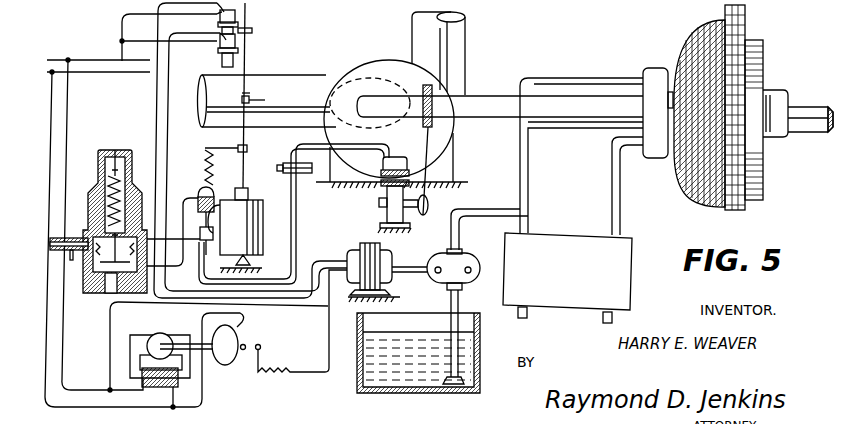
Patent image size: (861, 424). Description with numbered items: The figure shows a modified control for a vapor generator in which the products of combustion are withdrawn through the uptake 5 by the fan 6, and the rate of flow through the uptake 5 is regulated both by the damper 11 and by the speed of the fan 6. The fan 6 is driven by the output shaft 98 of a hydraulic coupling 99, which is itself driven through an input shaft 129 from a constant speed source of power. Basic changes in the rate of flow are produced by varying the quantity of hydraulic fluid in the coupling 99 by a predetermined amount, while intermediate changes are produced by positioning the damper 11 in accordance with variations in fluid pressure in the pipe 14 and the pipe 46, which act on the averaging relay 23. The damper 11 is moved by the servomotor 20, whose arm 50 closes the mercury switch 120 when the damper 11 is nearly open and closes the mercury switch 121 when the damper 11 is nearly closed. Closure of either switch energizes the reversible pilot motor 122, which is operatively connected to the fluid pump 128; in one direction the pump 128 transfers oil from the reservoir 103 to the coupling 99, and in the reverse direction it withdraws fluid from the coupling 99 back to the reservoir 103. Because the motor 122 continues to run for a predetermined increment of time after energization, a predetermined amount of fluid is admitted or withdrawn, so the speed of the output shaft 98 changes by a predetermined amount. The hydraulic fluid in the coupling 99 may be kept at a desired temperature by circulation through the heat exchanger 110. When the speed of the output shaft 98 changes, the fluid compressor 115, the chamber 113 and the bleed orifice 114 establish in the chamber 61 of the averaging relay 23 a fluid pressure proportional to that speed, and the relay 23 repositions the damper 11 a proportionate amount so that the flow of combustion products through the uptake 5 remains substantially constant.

The uptake 5 is at (316, 67).
The fan 6 is at (375, 60).
The damper 11 is at (263, 105).
The pipe 14 is at (92, 200).
The servomotor 20 is at (263, 236).
The averaging relay 23 is at (136, 162).
The pipe 46 is at (75, 262).
The arm 50 is at (249, 28).
The chamber 61 is at (95, 232).
The output shaft 98 is at (480, 82).
The hydraulic coupling 99 is at (762, 40).
The reservoir 103 is at (480, 350).
The heat exchanger 110 is at (634, 265).
The chamber 113 is at (306, 175).
The bleed orifice 114 is at (277, 167).
The fluid compressor 115 is at (386, 182).
The mercury switch 120 is at (215, 22).
The mercury switch 121 is at (218, 47).
The reversible pilot motor 122 is at (370, 250).
The fluid pump 128 is at (480, 266).
The input shaft 129 is at (796, 107).